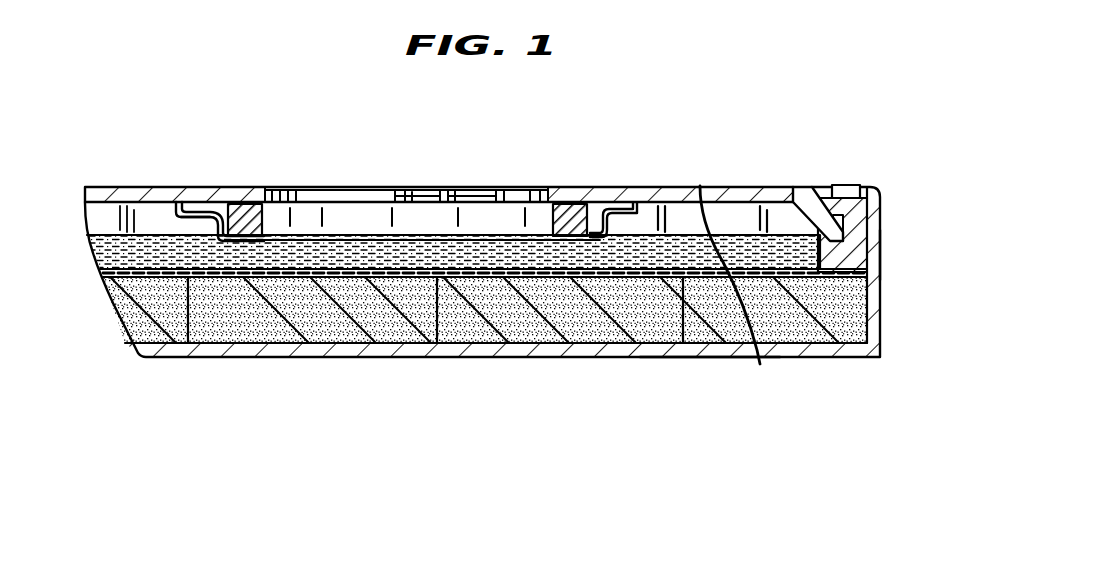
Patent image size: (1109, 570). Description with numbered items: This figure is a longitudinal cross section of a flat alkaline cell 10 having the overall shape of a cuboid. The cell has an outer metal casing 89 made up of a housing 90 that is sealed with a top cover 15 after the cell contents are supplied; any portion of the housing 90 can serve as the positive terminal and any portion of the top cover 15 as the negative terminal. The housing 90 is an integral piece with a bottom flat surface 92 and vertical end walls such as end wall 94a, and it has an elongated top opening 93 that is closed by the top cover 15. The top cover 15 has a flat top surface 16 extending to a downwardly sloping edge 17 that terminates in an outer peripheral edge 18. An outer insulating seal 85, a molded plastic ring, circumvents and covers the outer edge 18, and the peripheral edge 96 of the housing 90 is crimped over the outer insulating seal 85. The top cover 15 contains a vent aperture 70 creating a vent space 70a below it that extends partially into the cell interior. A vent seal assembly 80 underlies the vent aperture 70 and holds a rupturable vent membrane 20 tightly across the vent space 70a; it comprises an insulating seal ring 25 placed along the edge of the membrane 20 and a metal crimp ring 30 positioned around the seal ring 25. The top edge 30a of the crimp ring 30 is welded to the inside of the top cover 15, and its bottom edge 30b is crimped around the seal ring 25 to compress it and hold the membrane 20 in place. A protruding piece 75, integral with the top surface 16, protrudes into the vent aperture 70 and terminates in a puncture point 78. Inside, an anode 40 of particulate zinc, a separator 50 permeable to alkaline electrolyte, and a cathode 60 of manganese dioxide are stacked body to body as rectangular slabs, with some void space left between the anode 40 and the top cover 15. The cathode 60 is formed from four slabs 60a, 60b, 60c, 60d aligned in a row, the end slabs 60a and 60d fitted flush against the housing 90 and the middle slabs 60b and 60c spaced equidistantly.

The alkaline cell 10 is at (141, 138).
The top cover 15 is at (661, 188).
The flat top surface 16 is at (528, 193).
The downwardly sloping edge 17 is at (825, 187).
The outer peripheral edge 18 is at (881, 214).
The rupturable vent membrane 20 is at (374, 196).
The insulating seal ring 25 is at (236, 203).
The crimp ring 30 is at (201, 249).
The top edge of crimp ring 30a is at (189, 217).
The bottom edge of crimp ring 30b is at (233, 250).
The anode 40 is at (662, 250).
The separator 50 is at (657, 278).
The cathode 60 is at (563, 322).
The end cathode slab 60a is at (135, 331).
The middle cathode slab 60b is at (252, 330).
The middle cathode slab 60c is at (470, 328).
The end cathode slab 60d is at (790, 338).
The vent aperture 70 is at (338, 196).
The vent space 70a is at (296, 198).
The protruding piece 75 is at (438, 197).
The puncture point 78 is at (416, 195).
The vent seal assembly 80 is at (601, 208).
The outer insulating seal 85 is at (854, 205).
The outer metal casing 89 is at (859, 360).
The housing 90 is at (881, 314).
The bottom flat surface 92 is at (713, 360).
The top opening 93 is at (826, 185).
The vertical end wall 94a is at (881, 263).
The peripheral edge of housing 96 is at (858, 207).